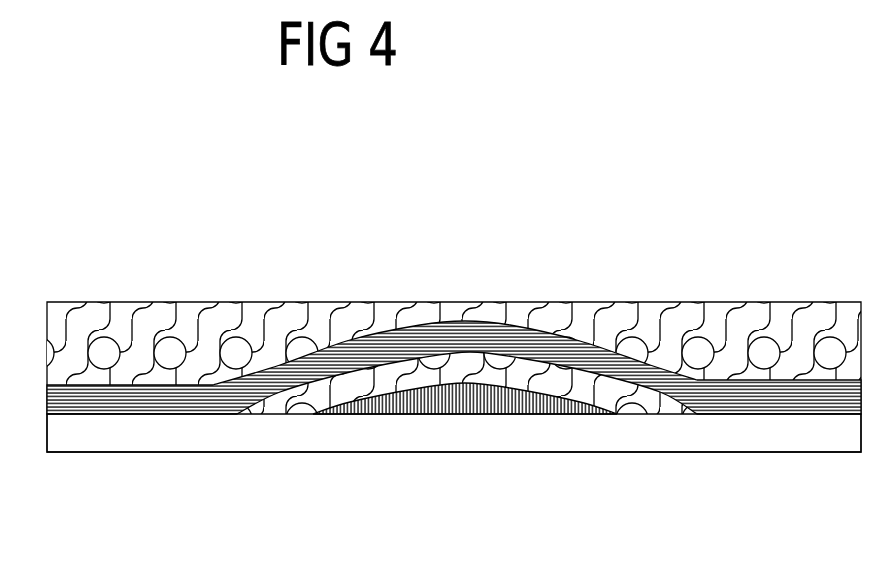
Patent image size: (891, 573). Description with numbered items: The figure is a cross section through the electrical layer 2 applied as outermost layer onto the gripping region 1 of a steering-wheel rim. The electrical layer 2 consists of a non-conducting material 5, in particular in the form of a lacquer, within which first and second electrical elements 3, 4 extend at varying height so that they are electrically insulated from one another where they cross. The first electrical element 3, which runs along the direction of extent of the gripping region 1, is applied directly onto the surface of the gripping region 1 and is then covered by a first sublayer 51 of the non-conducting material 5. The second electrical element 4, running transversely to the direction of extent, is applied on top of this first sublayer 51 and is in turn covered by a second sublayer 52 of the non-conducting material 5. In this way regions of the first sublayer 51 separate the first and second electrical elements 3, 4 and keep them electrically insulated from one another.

The gripping region 1 is at (146, 440).
The electrical layer 2 is at (83, 296).
The first electrical element 3 is at (440, 403).
The second electrical element 4 is at (455, 327).
The non-conducting material 5 is at (454, 368).
The first sublayer 51 is at (303, 403).
The second sublayer 52 is at (203, 307).